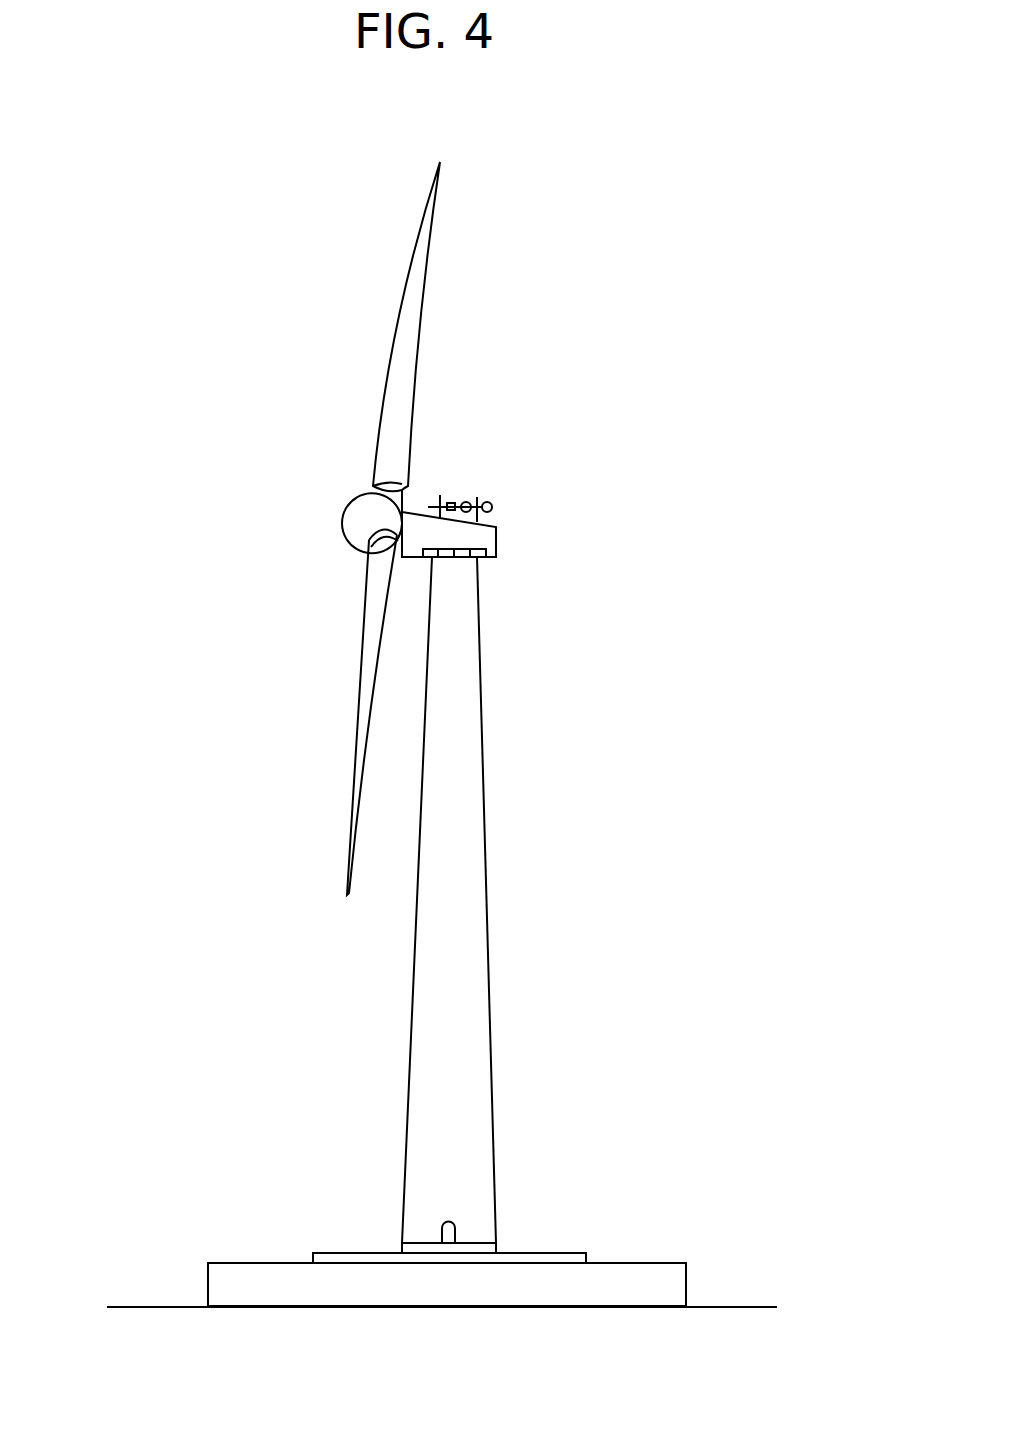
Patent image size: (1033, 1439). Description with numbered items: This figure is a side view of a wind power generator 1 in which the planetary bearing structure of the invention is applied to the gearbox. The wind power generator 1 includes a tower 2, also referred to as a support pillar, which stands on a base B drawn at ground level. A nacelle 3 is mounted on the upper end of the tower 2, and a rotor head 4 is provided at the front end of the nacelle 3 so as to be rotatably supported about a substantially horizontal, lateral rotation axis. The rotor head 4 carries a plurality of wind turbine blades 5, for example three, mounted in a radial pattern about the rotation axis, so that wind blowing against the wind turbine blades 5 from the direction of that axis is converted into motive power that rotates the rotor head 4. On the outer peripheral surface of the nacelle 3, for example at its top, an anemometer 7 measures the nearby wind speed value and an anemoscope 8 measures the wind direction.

The wind power generator 1 is at (608, 425).
The tower 2 is at (482, 757).
The nacelle 3 is at (495, 451).
The rotor head 4 is at (343, 522).
The wind turbine blade 5 is at (430, 267).
The anemometer 7 is at (492, 507).
The anemoscope 8 is at (447, 497).
The base (foundation) B is at (643, 1262).